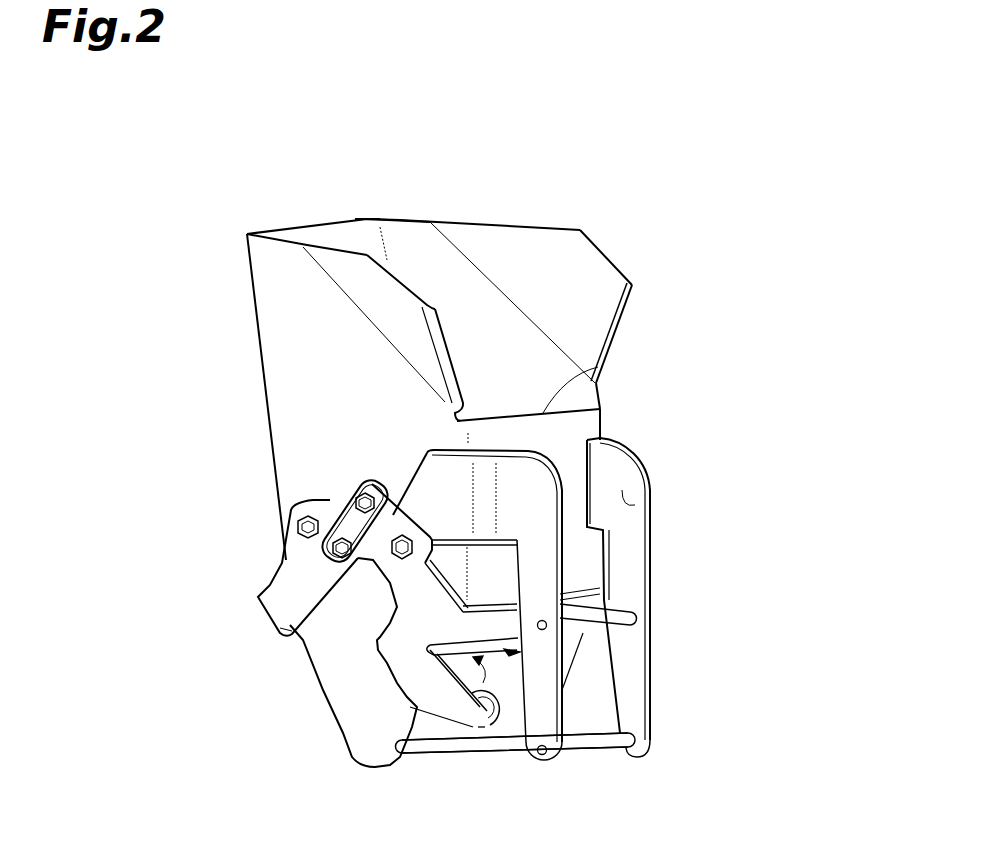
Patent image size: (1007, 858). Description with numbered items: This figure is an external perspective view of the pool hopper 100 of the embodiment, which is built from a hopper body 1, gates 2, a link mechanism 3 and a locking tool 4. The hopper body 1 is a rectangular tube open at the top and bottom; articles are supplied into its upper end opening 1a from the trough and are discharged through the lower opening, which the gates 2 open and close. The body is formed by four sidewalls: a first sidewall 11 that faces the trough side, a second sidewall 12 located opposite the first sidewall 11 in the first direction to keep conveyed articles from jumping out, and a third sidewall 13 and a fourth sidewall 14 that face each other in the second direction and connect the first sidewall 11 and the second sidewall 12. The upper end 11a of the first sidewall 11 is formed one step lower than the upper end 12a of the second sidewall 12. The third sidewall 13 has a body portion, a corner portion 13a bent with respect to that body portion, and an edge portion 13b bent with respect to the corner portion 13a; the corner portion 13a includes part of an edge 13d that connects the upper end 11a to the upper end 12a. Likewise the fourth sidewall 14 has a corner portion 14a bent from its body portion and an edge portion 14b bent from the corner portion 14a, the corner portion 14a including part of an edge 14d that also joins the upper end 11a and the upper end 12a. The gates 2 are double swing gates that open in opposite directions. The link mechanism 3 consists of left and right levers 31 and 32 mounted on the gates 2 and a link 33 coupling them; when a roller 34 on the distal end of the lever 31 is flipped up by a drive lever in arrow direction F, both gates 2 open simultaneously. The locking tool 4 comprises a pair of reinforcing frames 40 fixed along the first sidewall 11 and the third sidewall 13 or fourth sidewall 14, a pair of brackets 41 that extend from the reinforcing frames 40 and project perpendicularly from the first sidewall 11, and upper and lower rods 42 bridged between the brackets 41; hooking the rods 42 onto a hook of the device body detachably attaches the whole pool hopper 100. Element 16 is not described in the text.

The hopper body 1 is at (290, 382).
The upper end opening 1a is at (400, 216).
The gates 2 is at (516, 645).
The link mechanism 3 is at (331, 493).
The locking tool 4 is at (606, 597).
The first sidewall 11 is at (540, 417).
The upper end of the first sidewall 11a is at (600, 390).
The second sidewall 12 is at (333, 237).
The upper end of the second sidewall 12a is at (367, 218).
The third sidewall 13 is at (295, 300).
The corner portion 13a is at (400, 325).
The edge portion 13b is at (452, 362).
The edge 13d is at (400, 291).
The fourth sidewall 14 is at (470, 300).
The corner portion 14a is at (588, 285).
The edge portion 14b is at (622, 323).
The edge 14d is at (566, 172).
The bottom rod 16 is at (420, 753).
The lever 31 is at (407, 660).
The lever 32 is at (288, 588).
The link 33 is at (355, 497).
The roller 34 is at (487, 727).
The reinforcing frame 40 is at (436, 495).
The bracket 41 is at (624, 506).
The rod 42 is at (612, 742).
The pool hopper 100 is at (707, 346).